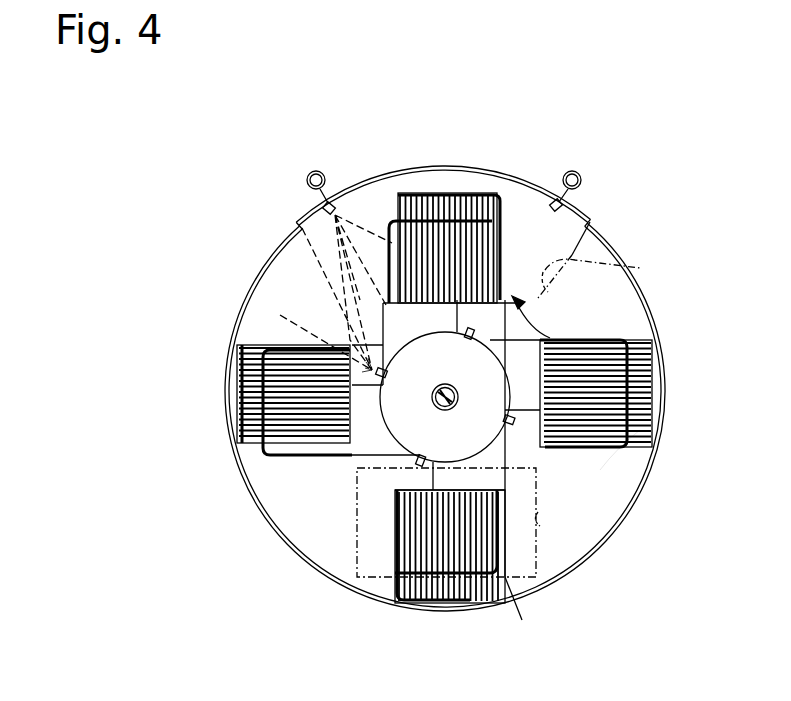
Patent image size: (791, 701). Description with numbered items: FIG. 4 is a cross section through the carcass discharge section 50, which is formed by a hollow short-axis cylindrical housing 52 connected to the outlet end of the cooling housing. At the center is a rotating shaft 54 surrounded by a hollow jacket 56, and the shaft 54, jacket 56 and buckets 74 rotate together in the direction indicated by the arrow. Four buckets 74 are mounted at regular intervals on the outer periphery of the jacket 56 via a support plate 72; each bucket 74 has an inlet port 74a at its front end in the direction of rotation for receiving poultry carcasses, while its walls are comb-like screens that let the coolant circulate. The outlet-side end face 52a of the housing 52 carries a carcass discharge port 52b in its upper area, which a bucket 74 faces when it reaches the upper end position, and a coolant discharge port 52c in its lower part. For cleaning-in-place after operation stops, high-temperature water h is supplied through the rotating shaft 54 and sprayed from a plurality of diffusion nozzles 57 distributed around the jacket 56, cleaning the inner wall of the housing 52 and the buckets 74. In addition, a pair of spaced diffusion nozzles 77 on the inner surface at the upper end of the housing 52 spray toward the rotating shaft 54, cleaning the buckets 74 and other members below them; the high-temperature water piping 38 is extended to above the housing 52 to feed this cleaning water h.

The high-temperature water piping 38 is at (315, 171).
The carcass discharge section 50 is at (446, 155).
The short-axis cylindrical housing 52 is at (665, 354).
The outlet-side end face 52a is at (617, 478).
The carcass discharge port 52b is at (629, 260).
The coolant discharge port 52c is at (532, 520).
The rotating shaft 54 is at (446, 410).
The jacket 56 is at (506, 360).
The diffusion nozzles 57 is at (381, 366).
The support plate 72 is at (360, 453).
The buckets 74 is at (240, 370).
The inlet port 74a is at (503, 590).
The diffusion nozzles 77 is at (322, 207).
The high-temperature water h is at (372, 370).